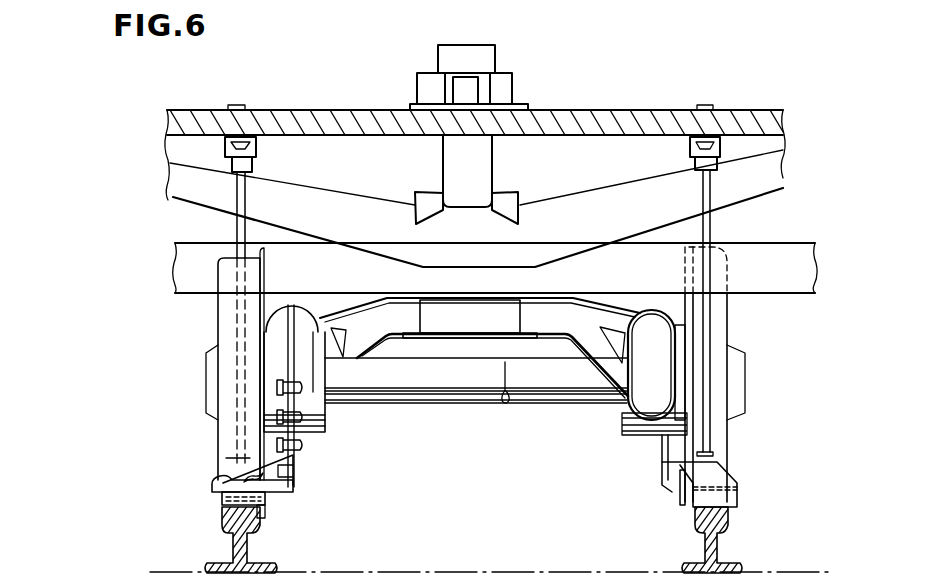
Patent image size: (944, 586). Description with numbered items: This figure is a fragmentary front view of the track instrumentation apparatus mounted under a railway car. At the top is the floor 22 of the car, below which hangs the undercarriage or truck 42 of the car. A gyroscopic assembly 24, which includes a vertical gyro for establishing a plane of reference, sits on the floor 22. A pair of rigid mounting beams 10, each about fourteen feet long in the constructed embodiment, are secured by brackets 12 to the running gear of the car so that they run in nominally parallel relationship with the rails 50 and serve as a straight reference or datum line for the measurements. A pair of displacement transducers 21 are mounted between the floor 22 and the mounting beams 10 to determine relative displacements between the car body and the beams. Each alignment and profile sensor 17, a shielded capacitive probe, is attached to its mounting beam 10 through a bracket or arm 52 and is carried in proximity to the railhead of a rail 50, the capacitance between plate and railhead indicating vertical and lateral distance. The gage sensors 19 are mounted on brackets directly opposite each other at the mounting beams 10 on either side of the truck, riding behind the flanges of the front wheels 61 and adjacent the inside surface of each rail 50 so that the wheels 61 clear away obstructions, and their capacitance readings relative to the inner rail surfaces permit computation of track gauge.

The mounting beam 10 is at (295, 472).
The brackets 12 is at (311, 443).
The alignment and profile sensor 17 is at (265, 500).
The gage sensor 19 is at (680, 509).
The displacement transducer 21 is at (710, 215).
The floor 22 is at (593, 126).
The gyroscopic assembly 24 is at (487, 59).
The truck 42 is at (472, 254).
The rail 50 is at (222, 515).
The bracket or arm 52 is at (225, 480).
The wheel 61 is at (231, 321).